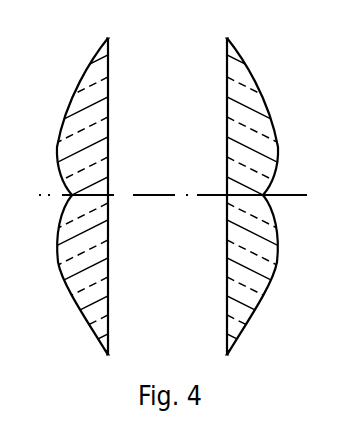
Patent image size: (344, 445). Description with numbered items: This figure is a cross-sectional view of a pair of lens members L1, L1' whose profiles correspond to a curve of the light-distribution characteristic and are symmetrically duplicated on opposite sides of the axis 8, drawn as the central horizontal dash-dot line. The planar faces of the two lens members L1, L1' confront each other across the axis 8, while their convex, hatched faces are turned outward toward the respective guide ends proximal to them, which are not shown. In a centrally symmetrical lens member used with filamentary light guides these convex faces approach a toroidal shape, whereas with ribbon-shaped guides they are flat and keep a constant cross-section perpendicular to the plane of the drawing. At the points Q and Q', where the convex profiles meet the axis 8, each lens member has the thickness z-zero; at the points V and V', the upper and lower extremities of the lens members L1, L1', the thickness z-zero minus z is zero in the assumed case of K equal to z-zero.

The axis 8 is at (160, 196).
The lens member L1 is at (73, 211).
The lens member L1' is at (262, 211).
The point V is at (106, 197).
The point V' is at (228, 197).
The point Q is at (51, 173).
The point Q' is at (279, 175).